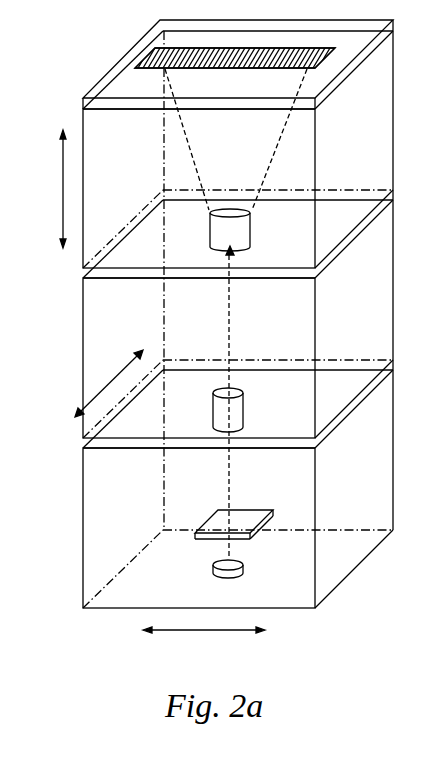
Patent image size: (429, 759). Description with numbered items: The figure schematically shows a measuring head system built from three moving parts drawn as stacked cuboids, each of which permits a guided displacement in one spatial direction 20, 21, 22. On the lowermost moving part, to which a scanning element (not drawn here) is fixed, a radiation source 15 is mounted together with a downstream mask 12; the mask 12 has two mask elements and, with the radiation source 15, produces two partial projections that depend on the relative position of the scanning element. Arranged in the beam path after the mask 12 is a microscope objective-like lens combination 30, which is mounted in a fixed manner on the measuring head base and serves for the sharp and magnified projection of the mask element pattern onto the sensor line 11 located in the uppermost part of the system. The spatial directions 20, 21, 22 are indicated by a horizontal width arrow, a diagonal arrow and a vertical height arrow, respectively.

The sensor line 11 is at (211, 49).
The mask 12 is at (298, 556).
The radiation source 15 is at (300, 596).
The spatial direction 20 is at (206, 644).
The spatial direction 21 is at (89, 378).
The spatial direction 22 is at (63, 190).
The lens combination 30 is at (243, 237).